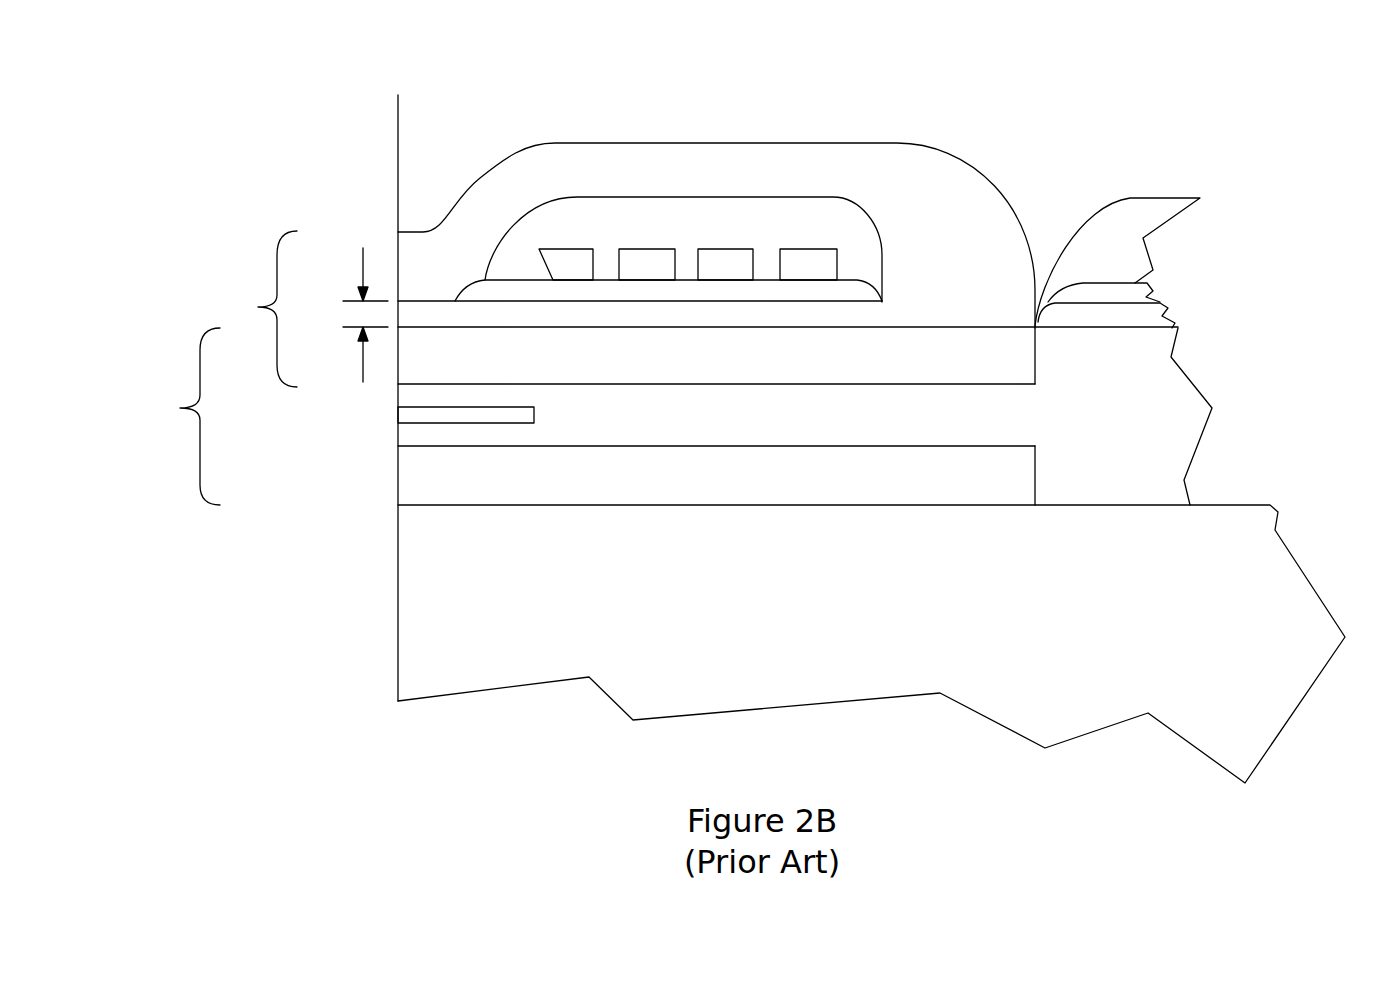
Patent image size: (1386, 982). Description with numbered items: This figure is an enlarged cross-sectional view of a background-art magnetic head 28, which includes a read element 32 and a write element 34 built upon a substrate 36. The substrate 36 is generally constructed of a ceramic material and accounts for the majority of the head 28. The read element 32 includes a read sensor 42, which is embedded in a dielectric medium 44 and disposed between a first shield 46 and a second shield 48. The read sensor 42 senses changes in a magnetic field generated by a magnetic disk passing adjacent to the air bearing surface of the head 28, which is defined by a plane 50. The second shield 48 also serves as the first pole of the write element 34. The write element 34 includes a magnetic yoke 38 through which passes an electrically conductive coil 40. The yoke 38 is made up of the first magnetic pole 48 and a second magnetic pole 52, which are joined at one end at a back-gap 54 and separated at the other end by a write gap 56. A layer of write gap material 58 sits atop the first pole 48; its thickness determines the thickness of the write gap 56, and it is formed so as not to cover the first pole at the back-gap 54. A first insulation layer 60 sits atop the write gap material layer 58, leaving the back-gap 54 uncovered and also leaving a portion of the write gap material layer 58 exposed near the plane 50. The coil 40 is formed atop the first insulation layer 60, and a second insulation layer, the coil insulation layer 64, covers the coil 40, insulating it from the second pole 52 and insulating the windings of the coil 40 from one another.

The head 28 is at (366, 617).
The read element 32 is at (183, 408).
The write element 34 is at (258, 307).
The substrate 36 is at (495, 657).
The magnetic yoke 38 is at (822, 138).
The electrically conductive coil 40 is at (635, 248).
The read sensor 42 is at (398, 417).
The dielectric medium 44 is at (700, 416).
The first shield 46 is at (775, 484).
The second shield 48 is at (832, 362).
The plane 50 is at (398, 128).
The second magnetic pole 52 is at (922, 170).
The back-gap 54 is at (966, 328).
The write gap 56 is at (363, 262).
The write gap material layer 58 is at (490, 318).
The first insulation layer 60 is at (640, 292).
The coil insulation layer 64 is at (720, 227).